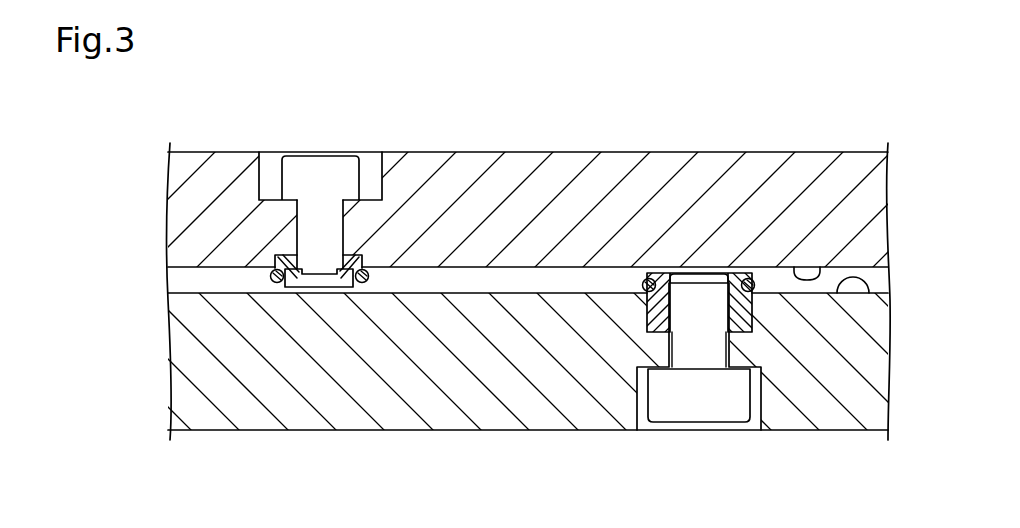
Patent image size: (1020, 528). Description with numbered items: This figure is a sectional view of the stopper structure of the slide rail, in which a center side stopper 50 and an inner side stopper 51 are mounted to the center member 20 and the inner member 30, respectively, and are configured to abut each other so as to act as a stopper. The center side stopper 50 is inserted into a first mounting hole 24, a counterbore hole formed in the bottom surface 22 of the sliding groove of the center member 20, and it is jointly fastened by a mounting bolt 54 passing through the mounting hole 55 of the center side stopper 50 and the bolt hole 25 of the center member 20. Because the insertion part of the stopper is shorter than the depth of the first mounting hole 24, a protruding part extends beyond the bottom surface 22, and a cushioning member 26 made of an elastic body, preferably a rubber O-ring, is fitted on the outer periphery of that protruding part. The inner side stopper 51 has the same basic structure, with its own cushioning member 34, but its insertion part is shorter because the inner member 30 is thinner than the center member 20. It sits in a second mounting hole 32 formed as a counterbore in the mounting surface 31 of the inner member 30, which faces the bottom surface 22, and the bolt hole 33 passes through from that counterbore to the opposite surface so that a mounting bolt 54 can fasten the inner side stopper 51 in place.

The center member 20 is at (540, 405).
The bottom surface 22 is at (869, 290).
The first mounting hole 24 is at (656, 360).
The bolt hole 25 is at (672, 349).
The cushioning member 26 is at (749, 274).
The inner member 30 is at (567, 176).
The mounting surface 31 is at (793, 263).
The second mounting hole 32 is at (288, 255).
The bolt hole 33 is at (301, 228).
The cushioning member 34 is at (253, 268).
The center side stopper 50 is at (717, 302).
The inner side stopper 51 is at (350, 253).
The mounting bolt 54 is at (333, 177).
The mounting hole 55 is at (683, 302).